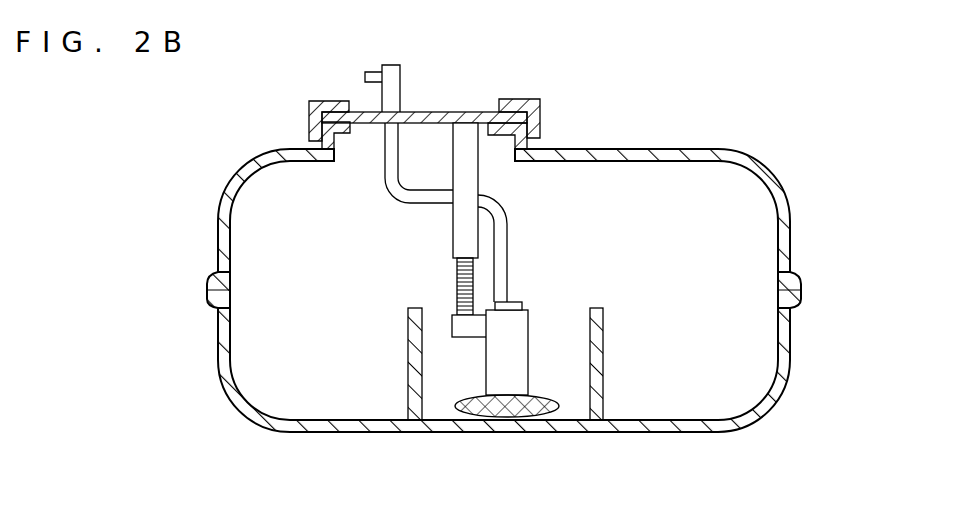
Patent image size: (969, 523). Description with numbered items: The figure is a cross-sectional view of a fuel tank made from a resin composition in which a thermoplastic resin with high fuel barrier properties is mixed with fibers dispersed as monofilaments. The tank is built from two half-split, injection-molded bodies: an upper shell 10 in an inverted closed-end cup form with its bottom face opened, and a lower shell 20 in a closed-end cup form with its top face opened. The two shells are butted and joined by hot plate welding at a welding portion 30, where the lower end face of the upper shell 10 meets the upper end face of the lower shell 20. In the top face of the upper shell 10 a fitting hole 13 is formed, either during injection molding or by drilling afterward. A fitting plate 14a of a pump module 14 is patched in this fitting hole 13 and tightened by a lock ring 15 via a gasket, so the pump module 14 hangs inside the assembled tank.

The upper shell 10 is at (781, 197).
The lower shell 20 is at (773, 397).
The welding portion 30 is at (813, 292).
The fitting hole 13 is at (343, 123).
The lock ring 15 is at (309, 108).
The pump module 14 is at (530, 293).
The fitting plate 14a is at (430, 112).